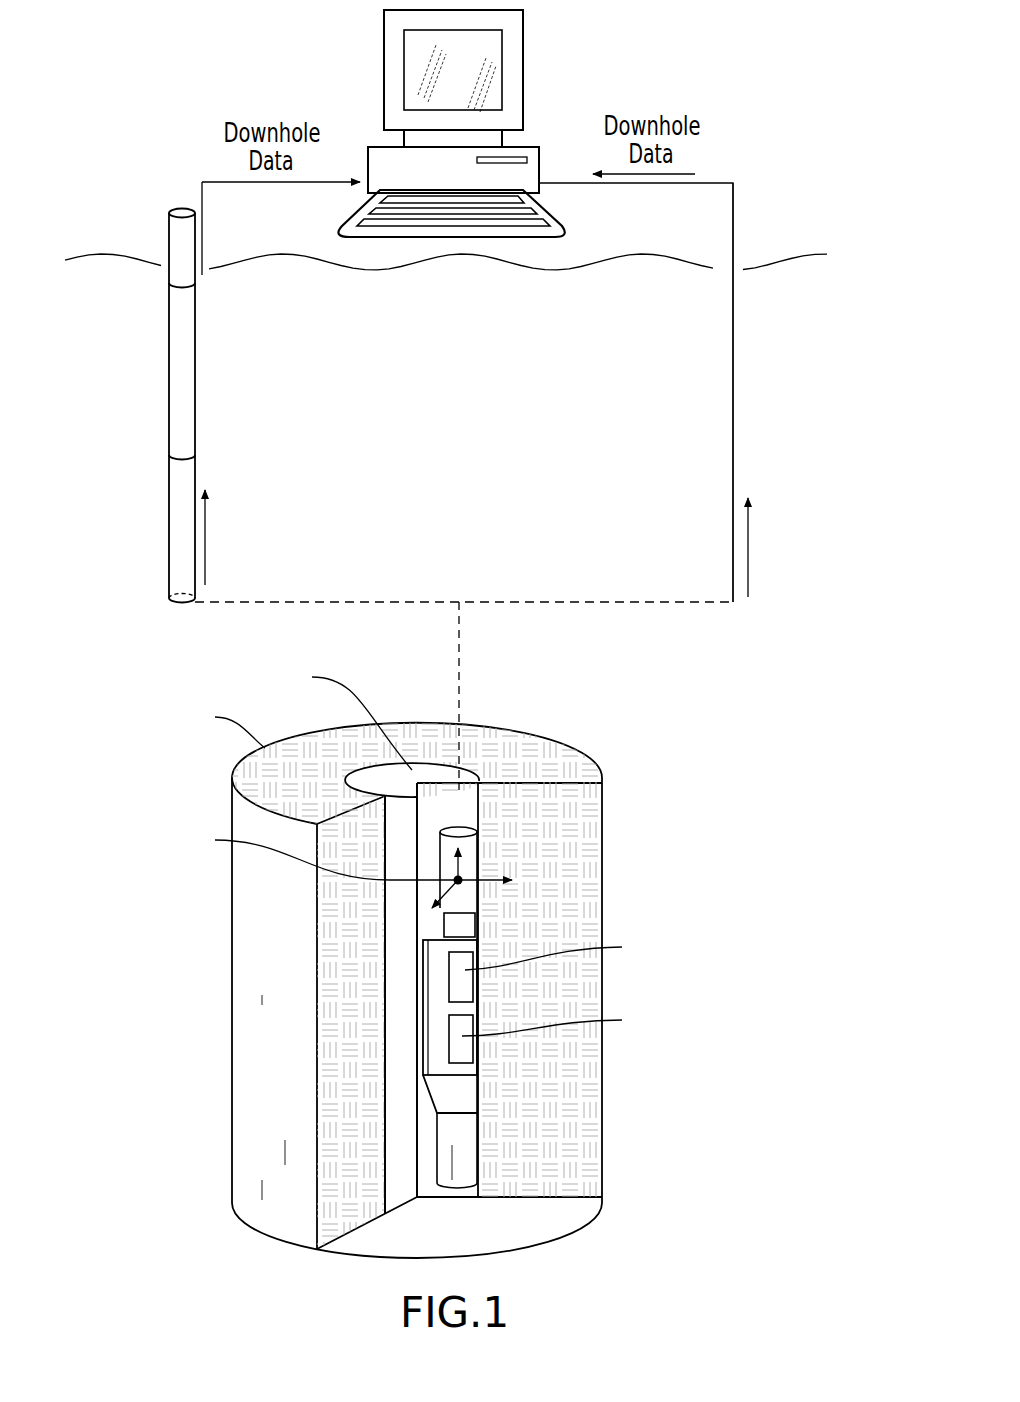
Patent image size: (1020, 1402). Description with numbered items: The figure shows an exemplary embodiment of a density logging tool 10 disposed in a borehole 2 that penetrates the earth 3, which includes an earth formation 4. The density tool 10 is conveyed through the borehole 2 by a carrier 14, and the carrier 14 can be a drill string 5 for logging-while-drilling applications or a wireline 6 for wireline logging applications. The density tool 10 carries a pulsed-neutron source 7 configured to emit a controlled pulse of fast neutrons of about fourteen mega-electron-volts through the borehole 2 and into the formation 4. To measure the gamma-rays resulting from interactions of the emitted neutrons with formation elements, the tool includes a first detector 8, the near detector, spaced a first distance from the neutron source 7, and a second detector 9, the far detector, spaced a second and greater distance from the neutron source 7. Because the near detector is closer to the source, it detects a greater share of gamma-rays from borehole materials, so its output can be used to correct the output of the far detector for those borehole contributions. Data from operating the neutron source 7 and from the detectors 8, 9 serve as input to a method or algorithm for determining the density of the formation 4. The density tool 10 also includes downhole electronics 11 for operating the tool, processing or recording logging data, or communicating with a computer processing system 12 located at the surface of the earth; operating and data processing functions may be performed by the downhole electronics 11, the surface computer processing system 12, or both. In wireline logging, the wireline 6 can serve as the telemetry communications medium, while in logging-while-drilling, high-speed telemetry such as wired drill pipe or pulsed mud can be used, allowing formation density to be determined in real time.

The borehole 2 is at (435, 770).
The earth 3 is at (465, 307).
The earth formation 4 is at (567, 757).
The drill string 5 is at (169, 413).
The wireline 6 is at (733, 428).
The pulsed-neutron source 7 is at (467, 873).
The first detector 8 is at (467, 995).
The second detector 9 is at (467, 1050).
The density logging tool 10 is at (423, 1053).
The downhole electronics 11 is at (465, 928).
The computer processing system 12 is at (527, 147).
The carrier 14 is at (460, 676).